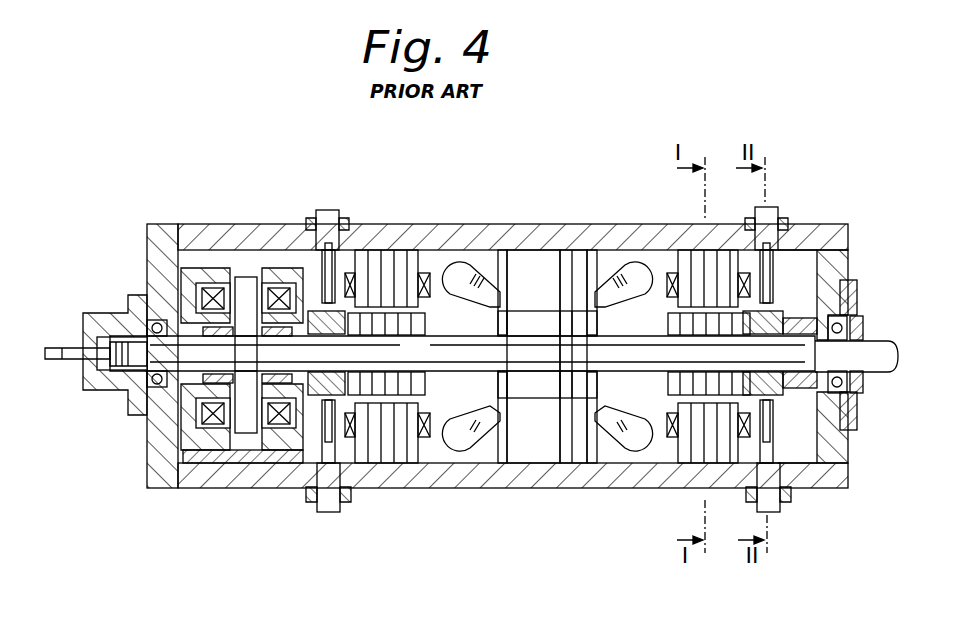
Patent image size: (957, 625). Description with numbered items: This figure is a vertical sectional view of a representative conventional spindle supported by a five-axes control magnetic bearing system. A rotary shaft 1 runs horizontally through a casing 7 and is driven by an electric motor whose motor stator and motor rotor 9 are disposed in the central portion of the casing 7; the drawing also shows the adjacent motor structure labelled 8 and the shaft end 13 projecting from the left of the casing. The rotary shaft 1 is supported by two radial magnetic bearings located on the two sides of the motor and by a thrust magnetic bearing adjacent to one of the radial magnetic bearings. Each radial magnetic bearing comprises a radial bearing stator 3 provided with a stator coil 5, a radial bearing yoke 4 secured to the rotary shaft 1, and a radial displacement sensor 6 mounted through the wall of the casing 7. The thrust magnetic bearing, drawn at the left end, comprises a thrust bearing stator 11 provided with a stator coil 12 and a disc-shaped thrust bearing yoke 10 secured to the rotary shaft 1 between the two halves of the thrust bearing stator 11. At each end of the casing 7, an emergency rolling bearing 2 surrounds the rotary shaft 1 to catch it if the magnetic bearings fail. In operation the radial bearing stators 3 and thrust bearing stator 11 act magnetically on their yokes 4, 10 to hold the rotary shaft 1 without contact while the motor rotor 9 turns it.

The rotary shaft 1 is at (878, 356).
The emergency rolling bearing 2 is at (140, 320).
The radial bearing stator 3 is at (398, 260).
The radial bearing yoke 4 is at (425, 320).
The stator coil 5 is at (425, 272).
The radial displacement sensor 6 is at (328, 275).
The casing 7 is at (605, 240).
The rotor 8 is at (565, 255).
The motor rotor 9 is at (597, 320).
The thrust bearing yoke 10 is at (247, 279).
The thrust bearing stator 11 is at (205, 272).
The stator coil 12 is at (214, 290).
The shaft extension 13 is at (58, 348).